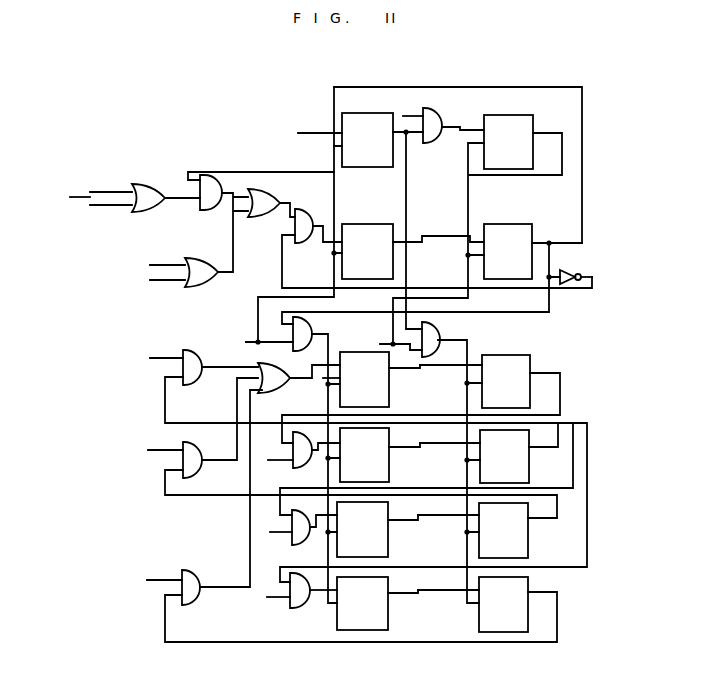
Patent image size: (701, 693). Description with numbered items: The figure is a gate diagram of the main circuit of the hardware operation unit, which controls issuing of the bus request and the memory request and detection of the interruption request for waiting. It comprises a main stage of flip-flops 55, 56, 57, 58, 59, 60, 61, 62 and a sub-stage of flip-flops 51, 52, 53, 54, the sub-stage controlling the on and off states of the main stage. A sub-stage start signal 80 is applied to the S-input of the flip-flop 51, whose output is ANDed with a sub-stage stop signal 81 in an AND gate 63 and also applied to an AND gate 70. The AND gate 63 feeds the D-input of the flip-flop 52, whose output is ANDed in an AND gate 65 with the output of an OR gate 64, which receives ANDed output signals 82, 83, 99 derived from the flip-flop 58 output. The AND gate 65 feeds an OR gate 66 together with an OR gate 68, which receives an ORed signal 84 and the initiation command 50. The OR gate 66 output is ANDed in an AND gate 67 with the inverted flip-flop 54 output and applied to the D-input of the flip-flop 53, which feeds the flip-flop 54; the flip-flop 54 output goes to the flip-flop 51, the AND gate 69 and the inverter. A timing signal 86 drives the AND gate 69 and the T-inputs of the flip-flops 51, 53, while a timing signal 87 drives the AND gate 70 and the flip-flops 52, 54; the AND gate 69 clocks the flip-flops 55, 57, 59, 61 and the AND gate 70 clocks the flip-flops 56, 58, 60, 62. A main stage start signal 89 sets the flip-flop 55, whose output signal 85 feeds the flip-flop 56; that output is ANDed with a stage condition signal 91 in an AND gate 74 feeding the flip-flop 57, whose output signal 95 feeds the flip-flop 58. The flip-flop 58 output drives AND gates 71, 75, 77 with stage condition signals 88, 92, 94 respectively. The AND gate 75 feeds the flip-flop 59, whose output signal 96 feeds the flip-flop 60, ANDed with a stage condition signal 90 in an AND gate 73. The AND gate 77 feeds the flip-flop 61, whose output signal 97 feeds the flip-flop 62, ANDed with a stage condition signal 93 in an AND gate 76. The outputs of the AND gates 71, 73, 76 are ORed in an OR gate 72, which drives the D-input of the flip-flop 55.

The initiation command 50 is at (165, 281).
The flip-flop 51 is at (372, 112).
The flip-flop 52 is at (516, 114).
The flip-flop 53 is at (377, 223).
The flip-flop 54 is at (516, 223).
The flip-flop 55 is at (370, 351).
The flip-flop 56 is at (512, 354).
The flip-flop 57 is at (389, 462).
The flip-flop 58 is at (533, 468).
The flip-flop 59 is at (390, 540).
The flip-flop 60 is at (530, 548).
The flip-flop 61 is at (390, 612).
The flip-flop 62 is at (529, 612).
The AND gate 63 is at (442, 121).
The OR gate 64 is at (146, 185).
The AND gate 65 is at (200, 209).
The OR gate 66 is at (258, 195).
The AND gate 67 is at (305, 210).
The OR gate 68 is at (212, 262).
The AND gate 69 is at (311, 322).
The AND gate 70 is at (438, 332).
The AND gate 71 is at (192, 350).
The OR gate 72 is at (262, 361).
The AND gate 73 is at (197, 445).
The AND gate 74 is at (298, 467).
The AND gate 75 is at (298, 543).
The AND gate 76 is at (195, 570).
The AND gate 77 is at (302, 607).
The sub-stage start signal 80 is at (318, 132).
The sub-stage stop signal 81 is at (412, 115).
The ANDed output signal 82 is at (102, 191).
The ANDed output signal 83 is at (68, 198).
The ORed signal 84 is at (165, 264).
The output signal 85 is at (444, 366).
The timing signal 86 is at (252, 341).
The timing signal 87 is at (396, 346).
The stage condition signal 88 is at (157, 357).
The main stage start signal 89 is at (323, 379).
The stage condition signal 90 is at (152, 449).
The stage condition signal 91 is at (272, 461).
The stage condition signal 92 is at (272, 531).
The stage condition signal 93 is at (571, 271).
The stage condition signal 94 is at (268, 598).
The output signal 95 is at (450, 445).
The output signal 96 is at (445, 517).
The output signal 97 is at (445, 592).
The ANDed output signal 99 is at (103, 206).